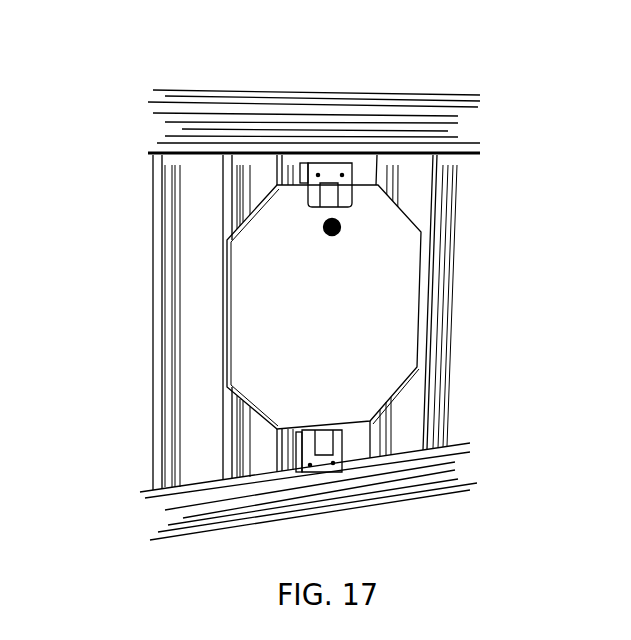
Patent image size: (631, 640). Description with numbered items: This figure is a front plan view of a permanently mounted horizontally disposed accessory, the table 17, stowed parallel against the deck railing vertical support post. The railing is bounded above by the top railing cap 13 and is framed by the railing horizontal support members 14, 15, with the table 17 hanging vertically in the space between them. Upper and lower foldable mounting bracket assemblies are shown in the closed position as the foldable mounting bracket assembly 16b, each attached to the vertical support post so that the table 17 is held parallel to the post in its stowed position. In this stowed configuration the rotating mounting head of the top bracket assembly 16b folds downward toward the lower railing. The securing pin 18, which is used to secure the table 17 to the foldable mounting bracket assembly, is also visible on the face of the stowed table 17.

The top railing cap 13 is at (335, 91).
The railing horizontal support member 14 is at (463, 136).
The railing horizontal support member 15 is at (453, 470).
The foldable mounting bracket assembly in the closed position 16b is at (330, 175).
The horizontally supported accessory 17 is at (283, 312).
The securing pin 18 is at (340, 226).